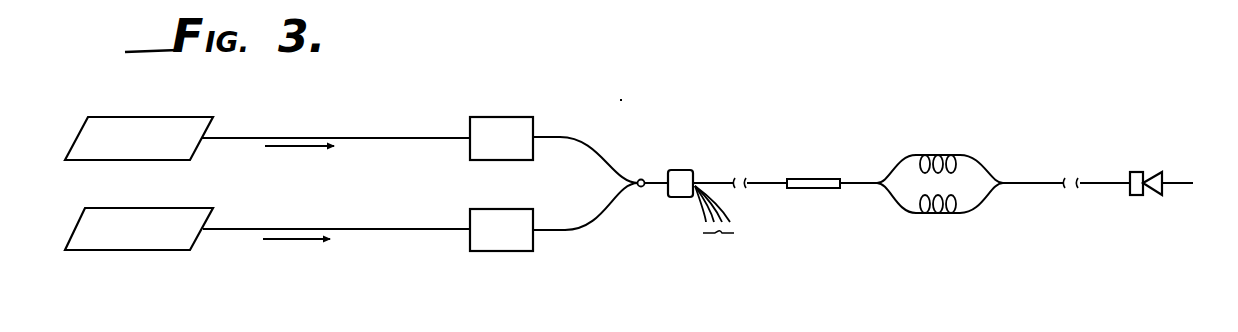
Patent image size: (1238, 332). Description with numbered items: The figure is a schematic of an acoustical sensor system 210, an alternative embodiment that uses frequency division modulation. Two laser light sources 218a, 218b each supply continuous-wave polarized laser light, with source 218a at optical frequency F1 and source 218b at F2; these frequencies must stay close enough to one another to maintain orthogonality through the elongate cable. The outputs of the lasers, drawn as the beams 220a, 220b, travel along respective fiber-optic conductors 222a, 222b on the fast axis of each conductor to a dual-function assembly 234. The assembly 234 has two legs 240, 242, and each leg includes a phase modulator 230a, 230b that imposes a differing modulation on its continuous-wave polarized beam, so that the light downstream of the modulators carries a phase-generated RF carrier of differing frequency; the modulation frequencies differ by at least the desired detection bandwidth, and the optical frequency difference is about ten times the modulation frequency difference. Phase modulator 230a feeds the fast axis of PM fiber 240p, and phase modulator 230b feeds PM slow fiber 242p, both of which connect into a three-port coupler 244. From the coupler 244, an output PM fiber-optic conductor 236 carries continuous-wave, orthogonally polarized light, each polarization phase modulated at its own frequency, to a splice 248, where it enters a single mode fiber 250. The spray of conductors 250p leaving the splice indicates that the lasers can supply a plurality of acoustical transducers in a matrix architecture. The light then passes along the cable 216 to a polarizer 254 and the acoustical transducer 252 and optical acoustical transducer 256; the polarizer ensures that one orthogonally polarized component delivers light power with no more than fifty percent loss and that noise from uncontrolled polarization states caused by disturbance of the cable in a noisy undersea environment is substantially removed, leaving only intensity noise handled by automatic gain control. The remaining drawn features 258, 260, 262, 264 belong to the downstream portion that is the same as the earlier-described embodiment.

The acoustical sensor system 210 is at (638, 103).
The cable 216 is at (752, 165).
The laser light source 218a is at (142, 116).
The laser light source 218b is at (130, 252).
The first light beam 220a is at (274, 150).
The second light beam 220b is at (268, 243).
The fiber-optic conductor 222a is at (305, 136).
The fiber-optic conductor 222b is at (331, 228).
The phase modulator 230a is at (470, 150).
The phase modulator 230b is at (470, 215).
The dual-function assembly 234 is at (547, 90).
The output PM fiber-optic conductor 236 is at (655, 193).
The leg 240 is at (455, 118).
The leg 242 is at (460, 252).
The PM fiber 240p is at (560, 136).
The PM slow fiber 242p is at (551, 232).
The three-port coupler 244 is at (643, 157).
The splice 248 is at (692, 150).
The single mode fiber 250 is at (758, 187).
The spray of conductors 250p is at (721, 227).
The acoustical transducer 252 is at (916, 150).
The polarizer 254 is at (825, 190).
The optical acoustical transducer 256 is at (975, 152).
The applied perturbation 258 is at (956, 148).
The output optical fiber 260 is at (1073, 188).
The photodetector 262 is at (1152, 172).
The detector output 264 is at (1185, 185).